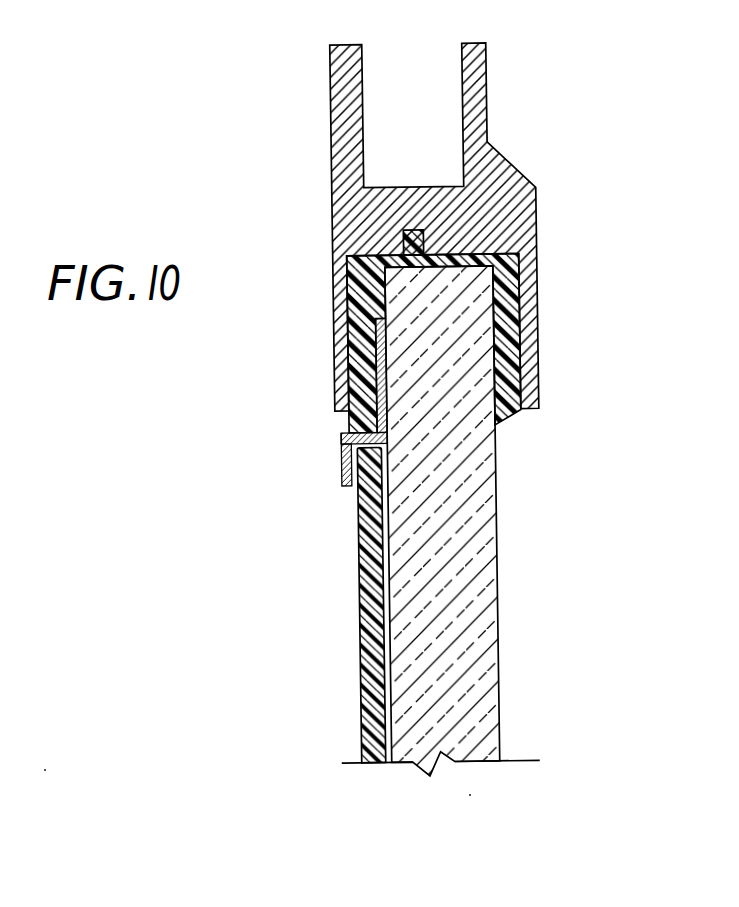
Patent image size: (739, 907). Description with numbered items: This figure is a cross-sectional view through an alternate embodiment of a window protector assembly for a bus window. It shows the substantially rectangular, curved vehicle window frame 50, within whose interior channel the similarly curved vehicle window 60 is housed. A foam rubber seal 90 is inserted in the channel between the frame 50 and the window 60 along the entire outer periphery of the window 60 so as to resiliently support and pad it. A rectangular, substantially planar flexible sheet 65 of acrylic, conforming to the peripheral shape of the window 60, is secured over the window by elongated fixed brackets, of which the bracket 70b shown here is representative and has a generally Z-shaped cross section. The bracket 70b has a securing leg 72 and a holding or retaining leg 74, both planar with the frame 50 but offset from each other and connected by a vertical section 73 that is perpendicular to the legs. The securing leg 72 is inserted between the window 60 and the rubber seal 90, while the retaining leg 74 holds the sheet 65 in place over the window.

The vehicle window frame 50 is at (516, 161).
The vehicle window 60 is at (503, 608).
The flexible sheet 65 is at (360, 661).
The securing leg 72 is at (372, 337).
The vertical section 73 is at (374, 434).
The fixed bracket 70b is at (338, 434).
The retaining leg 74 is at (338, 467).
The foam rubber seal 90 is at (512, 423).